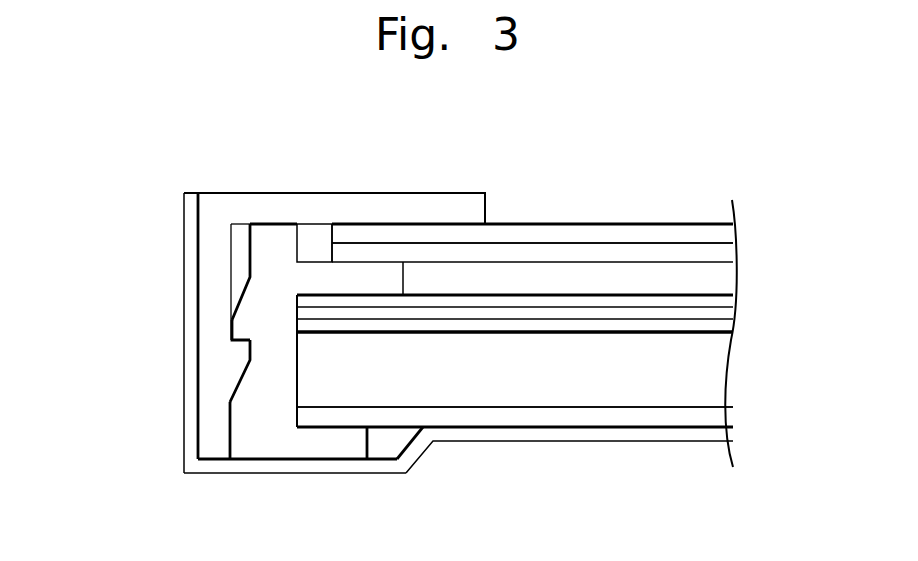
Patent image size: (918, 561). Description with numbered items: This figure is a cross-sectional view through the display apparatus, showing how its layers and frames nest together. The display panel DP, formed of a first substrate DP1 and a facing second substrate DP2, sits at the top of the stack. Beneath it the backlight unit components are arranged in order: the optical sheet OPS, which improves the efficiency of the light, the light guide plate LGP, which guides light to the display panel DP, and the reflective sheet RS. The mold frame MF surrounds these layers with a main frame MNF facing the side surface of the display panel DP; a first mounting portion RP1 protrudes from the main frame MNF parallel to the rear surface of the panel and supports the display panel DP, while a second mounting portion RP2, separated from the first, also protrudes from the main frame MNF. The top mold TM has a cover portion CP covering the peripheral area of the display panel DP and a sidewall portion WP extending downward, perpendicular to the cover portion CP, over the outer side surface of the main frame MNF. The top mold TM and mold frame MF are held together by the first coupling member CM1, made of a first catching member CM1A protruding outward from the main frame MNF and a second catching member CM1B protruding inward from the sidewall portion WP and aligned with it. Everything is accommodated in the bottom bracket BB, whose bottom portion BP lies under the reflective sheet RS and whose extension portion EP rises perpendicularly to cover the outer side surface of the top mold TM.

The top mold TM is at (334, 192).
The cover portion CP is at (325, 202).
The first mounting portion RP1 is at (372, 273).
The display panel DP is at (559, 213).
The first substrate DP1 is at (662, 252).
The second substrate DP2 is at (598, 235).
The optical sheet OPS is at (748, 293).
The light guide plate LGP is at (715, 370).
The reflective sheet RS is at (710, 418).
The bottom bracket BB is at (424, 366).
The bottom portion BP is at (287, 467).
The extension portion EP is at (190, 417).
The mold frame MF is at (153, 382).
The sidewall portion WP is at (207, 278).
The first coupling member CM1 is at (145, 359).
The first catching member CM1A is at (232, 325).
The second catching member CM1B is at (240, 350).
The main frame MNF is at (267, 400).
The second mounting portion RP2 is at (345, 450).